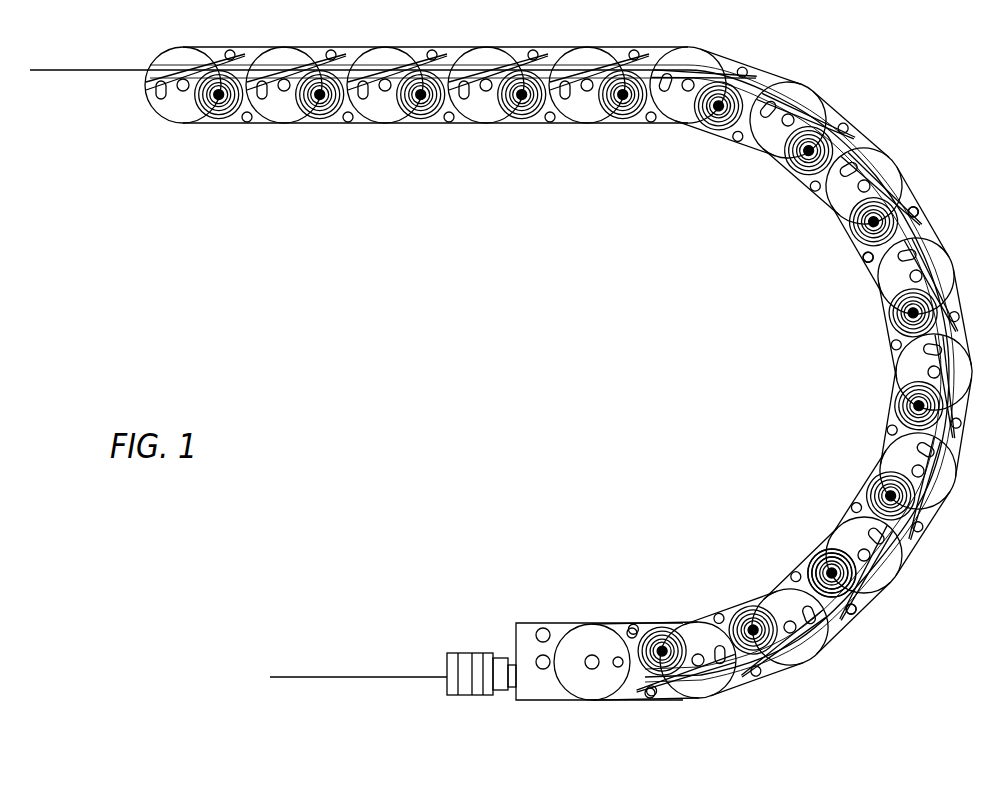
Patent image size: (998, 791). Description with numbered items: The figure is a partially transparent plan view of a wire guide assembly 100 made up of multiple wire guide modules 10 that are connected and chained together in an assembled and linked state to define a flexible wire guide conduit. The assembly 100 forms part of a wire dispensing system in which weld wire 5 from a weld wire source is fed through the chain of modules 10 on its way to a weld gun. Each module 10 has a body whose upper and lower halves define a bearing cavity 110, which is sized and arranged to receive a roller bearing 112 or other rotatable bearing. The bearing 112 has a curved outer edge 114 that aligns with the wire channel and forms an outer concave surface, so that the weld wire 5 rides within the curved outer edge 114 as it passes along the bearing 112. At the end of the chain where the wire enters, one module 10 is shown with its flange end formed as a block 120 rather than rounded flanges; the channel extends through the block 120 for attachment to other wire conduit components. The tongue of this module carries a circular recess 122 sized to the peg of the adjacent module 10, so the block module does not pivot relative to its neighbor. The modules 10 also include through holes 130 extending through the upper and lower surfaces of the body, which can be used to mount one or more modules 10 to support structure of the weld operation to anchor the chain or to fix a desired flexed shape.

The wire guide assembly 100 is at (958, 84).
The wire guide module 10 is at (441, 125).
The weld wire 5 is at (352, 676).
The bearing cavity 110 is at (812, 563).
The roller bearing 112 is at (825, 550).
The curved outer edge 114 is at (855, 614).
The block 120 is at (532, 622).
The circular recess 122 is at (619, 656).
The through holes 130 is at (916, 208).